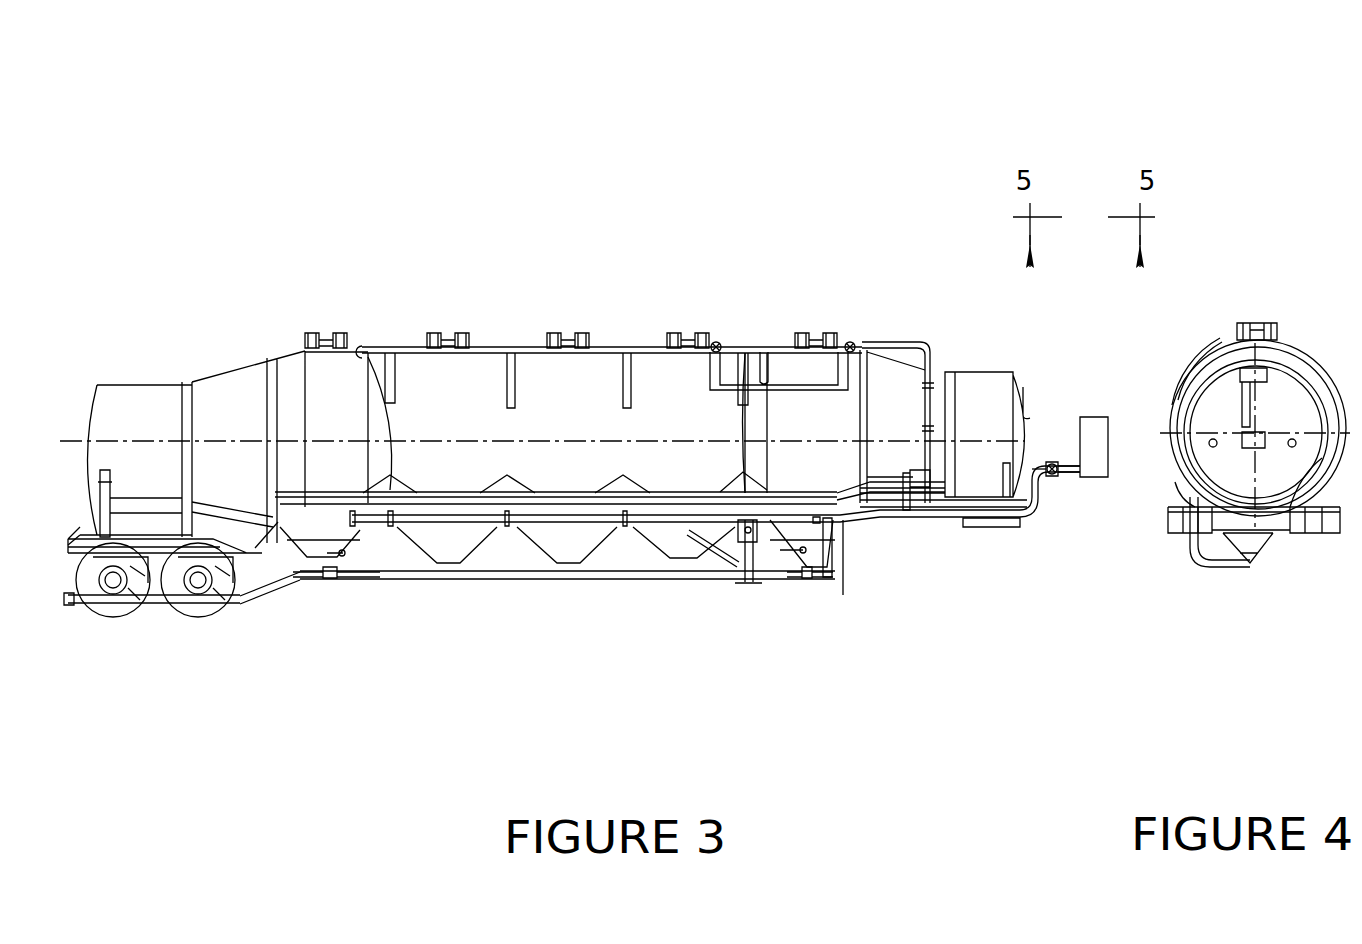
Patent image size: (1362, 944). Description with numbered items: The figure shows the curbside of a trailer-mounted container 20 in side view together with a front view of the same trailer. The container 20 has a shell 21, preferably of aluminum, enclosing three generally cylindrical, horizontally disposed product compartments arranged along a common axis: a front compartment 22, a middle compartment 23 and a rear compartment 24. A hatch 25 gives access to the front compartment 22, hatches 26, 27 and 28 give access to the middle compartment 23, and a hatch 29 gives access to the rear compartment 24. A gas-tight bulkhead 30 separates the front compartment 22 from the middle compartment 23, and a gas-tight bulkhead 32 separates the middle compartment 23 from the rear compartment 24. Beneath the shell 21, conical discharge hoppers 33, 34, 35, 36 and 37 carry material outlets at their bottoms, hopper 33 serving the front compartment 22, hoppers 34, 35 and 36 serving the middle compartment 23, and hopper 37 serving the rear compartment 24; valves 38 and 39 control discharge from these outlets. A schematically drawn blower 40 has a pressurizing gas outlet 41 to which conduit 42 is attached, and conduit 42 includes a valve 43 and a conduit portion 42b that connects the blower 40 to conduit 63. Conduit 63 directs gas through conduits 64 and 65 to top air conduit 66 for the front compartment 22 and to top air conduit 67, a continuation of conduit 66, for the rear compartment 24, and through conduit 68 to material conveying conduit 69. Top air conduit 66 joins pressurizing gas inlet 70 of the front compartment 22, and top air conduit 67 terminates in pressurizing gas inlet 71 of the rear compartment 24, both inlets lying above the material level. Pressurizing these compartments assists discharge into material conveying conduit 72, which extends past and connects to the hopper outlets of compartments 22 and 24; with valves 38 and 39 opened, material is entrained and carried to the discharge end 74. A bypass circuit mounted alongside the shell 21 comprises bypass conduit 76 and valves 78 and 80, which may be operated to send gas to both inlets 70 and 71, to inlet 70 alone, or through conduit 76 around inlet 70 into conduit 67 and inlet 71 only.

In FIG. 3, the trailer-mounted container 20 is at (642, 176).
In FIG. 4, the trailer-mounted container 20 is at (1255, 222).
In FIG. 3, the shell 21 is at (212, 370).
In FIG. 3, the front compartment 22 is at (857, 400).
In FIG. 3, the middle compartment 23 is at (560, 385).
In FIG. 3, the rear compartment 24 is at (353, 358).
In FIG. 3, the hatch 25 is at (812, 333).
In FIG. 3, the hatch 26 is at (686, 333).
In FIG. 3, the hatch 27 is at (567, 333).
In FIG. 3, the hatch 28 is at (448, 333).
In FIG. 3, the hatch 29 is at (327, 333).
In FIG. 3, the bulkhead 30 is at (742, 428).
In FIG. 3, the bulkhead 32 is at (393, 402).
In FIG. 3, the conical discharge hopper 33 is at (800, 545).
In FIG. 3, the conical discharge hopper 34 is at (675, 545).
In FIG. 3, the conical discharge hopper 35 is at (555, 545).
In FIG. 3, the conical discharge hopper 36 is at (435, 545).
In FIG. 3, the conical discharge hopper 37 is at (327, 535).
In FIG. 3, the valve 38 is at (810, 580).
In FIG. 3, the valve 39 is at (332, 585).
In FIG. 3, the blower 40 is at (1092, 432).
In FIG. 3, the pressurizing gas outlet 41 is at (1075, 479).
In FIG. 3, the conduit 42 is at (1058, 455).
In FIG. 3, the conduit portion 42b is at (1040, 455).
In FIG. 3, the valve 43 is at (1053, 479).
In FIG. 3, the conduit 63 is at (1030, 505).
In FIG. 3, the conduit 64 is at (905, 487).
In FIG. 3, the conduit 65 is at (936, 362).
In FIG. 3, the top air conduit 66 is at (913, 334).
In FIG. 3, the top air conduit 67 is at (414, 337).
In FIG. 3, the conduit 68 is at (850, 547).
In FIG. 3, the material conveying conduit 69 is at (698, 588).
In FIG. 3, the pressurizing gas inlet 70 is at (764, 335).
In FIG. 3, the pressurizing gas inlet 71 is at (305, 373).
In FIG. 3, the material conveying conduit 72 is at (565, 580).
In FIG. 3, the discharge end 74 is at (86, 612).
In FIG. 3, the bypass conduit 76 is at (812, 392).
In FIG. 3, the valve 78 is at (851, 334).
In FIG. 3, the valve 80 is at (717, 334).